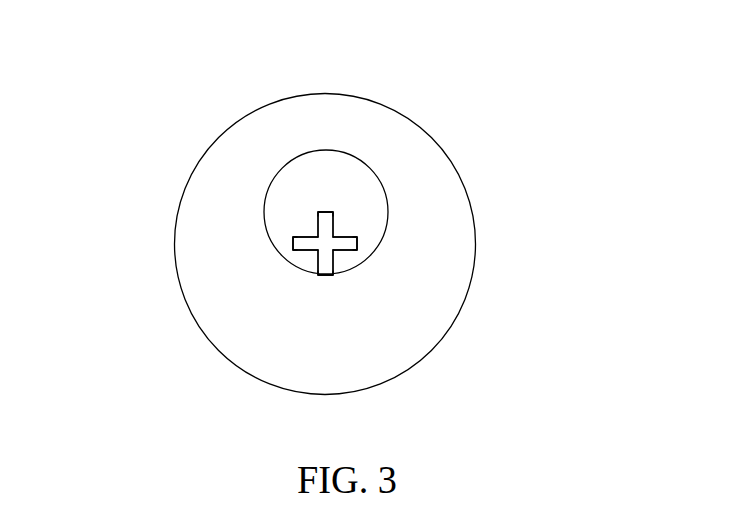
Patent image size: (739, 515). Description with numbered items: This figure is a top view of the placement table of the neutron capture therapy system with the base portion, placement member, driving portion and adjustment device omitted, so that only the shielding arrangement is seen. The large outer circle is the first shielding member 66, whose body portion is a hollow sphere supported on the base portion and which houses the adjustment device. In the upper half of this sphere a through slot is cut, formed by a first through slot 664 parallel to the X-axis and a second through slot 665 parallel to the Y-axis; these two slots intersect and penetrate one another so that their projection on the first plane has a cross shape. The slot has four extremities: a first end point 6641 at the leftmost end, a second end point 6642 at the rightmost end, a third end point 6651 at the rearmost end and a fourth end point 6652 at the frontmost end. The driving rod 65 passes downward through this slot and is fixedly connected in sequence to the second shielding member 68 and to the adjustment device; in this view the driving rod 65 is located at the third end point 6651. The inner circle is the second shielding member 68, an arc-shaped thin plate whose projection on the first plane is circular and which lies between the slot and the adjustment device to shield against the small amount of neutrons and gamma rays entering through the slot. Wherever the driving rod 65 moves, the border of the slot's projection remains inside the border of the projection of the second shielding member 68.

The first shielding member 66 is at (415, 120).
The second shielding member 68 is at (290, 163).
The driving rod 65 is at (325, 213).
The first through slot 664 is at (312, 236).
The first end point 6641 is at (293, 242).
The second end point 6642 is at (357, 244).
The second through slot 665 is at (333, 228).
The third end point 6651 is at (327, 212).
The fourth end point 6652 is at (333, 273).